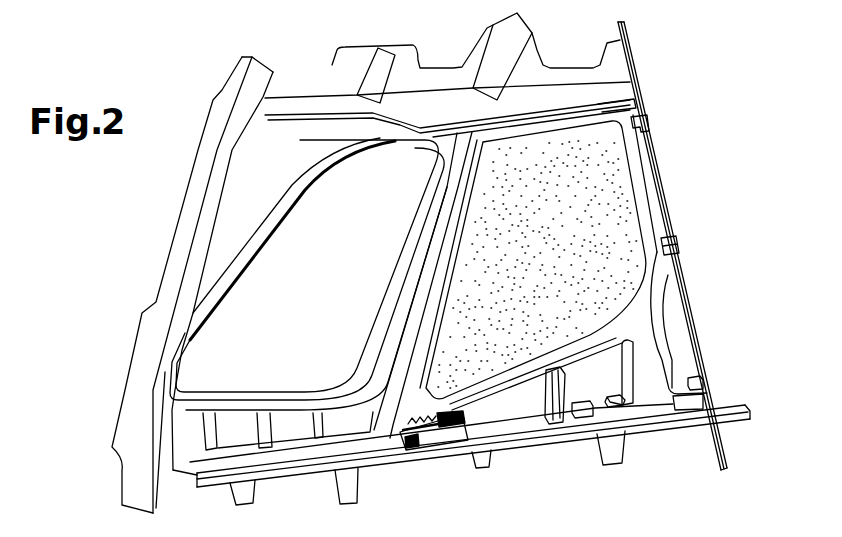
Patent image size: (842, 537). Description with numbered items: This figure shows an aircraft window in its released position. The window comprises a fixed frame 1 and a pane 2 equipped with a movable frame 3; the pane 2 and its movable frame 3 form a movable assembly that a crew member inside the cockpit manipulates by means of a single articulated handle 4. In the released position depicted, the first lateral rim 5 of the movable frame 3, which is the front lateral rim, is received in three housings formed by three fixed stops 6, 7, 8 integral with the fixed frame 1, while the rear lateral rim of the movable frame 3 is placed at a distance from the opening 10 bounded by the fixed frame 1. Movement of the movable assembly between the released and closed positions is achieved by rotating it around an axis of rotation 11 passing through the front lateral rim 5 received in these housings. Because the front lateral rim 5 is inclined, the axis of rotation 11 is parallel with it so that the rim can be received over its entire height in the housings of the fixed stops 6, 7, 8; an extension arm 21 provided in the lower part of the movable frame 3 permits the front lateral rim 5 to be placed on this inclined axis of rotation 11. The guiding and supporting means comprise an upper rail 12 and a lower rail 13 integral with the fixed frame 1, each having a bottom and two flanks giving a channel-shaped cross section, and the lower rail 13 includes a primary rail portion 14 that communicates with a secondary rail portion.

The fixed frame 1 is at (175, 257).
The pane 2 is at (622, 180).
The movable frame 3 is at (455, 195).
The handle 4 is at (535, 400).
The first lateral rim 5 is at (668, 203).
The fixed stop 6 is at (640, 127).
The fixed stop 7 is at (677, 246).
The fixed stop 8 is at (706, 378).
The opening 10 is at (405, 333).
The axis of rotation 11 is at (726, 450).
The upper rail 12 is at (615, 100).
The lower rail 13 is at (251, 467).
The primary rail portion 14 is at (400, 455).
The extension arm 21 is at (705, 405).